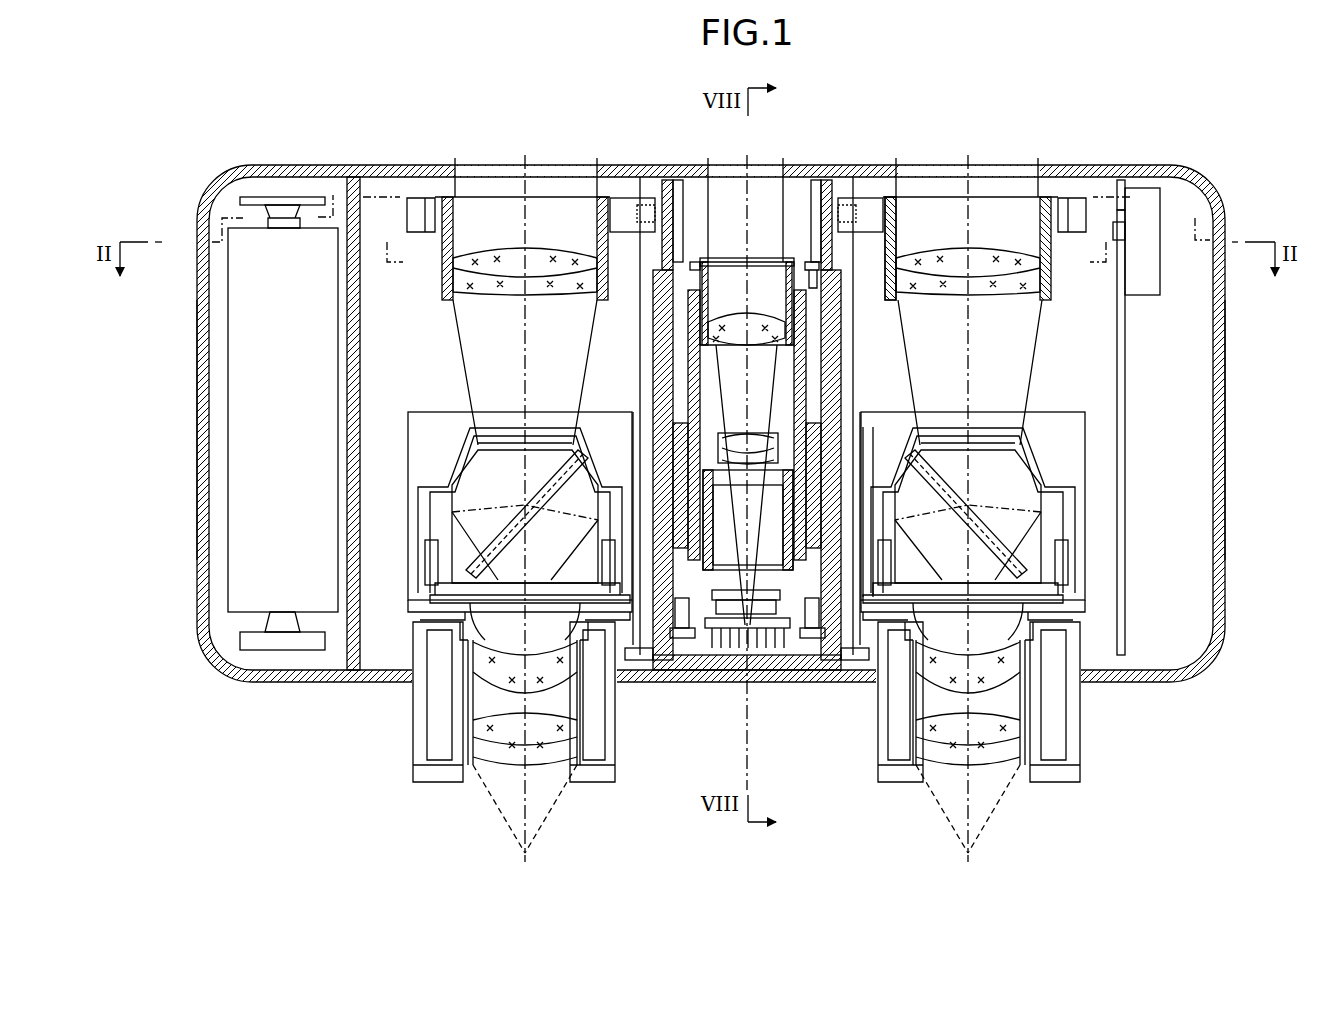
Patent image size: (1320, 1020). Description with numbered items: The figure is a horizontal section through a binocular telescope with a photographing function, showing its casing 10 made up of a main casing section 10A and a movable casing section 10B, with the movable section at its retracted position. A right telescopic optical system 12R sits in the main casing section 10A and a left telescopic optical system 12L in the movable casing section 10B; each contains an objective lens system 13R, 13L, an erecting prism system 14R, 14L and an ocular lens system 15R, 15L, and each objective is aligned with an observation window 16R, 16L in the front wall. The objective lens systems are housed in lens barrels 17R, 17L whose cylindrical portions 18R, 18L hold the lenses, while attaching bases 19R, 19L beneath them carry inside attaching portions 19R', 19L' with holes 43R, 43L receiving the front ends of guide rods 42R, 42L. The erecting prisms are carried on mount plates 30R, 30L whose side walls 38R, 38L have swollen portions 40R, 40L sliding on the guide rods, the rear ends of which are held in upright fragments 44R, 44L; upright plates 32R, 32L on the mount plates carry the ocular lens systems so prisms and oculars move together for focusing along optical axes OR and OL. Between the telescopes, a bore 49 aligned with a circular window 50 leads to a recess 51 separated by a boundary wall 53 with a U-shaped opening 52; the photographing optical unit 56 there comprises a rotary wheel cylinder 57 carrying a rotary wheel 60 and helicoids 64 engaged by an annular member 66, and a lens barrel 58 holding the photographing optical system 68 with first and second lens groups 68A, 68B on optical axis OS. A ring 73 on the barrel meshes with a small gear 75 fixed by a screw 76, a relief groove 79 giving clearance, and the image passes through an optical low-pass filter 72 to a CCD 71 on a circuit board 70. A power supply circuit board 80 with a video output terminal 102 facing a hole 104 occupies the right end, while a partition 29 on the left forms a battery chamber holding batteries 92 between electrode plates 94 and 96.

The casing 10 is at (818, 166).
The main casing section 10A is at (1228, 405).
The movable casing section 10B is at (195, 437).
The left telescopic optical system 12L is at (492, 221).
The right telescopic optical system 12R is at (972, 226).
The objective lens system 13L is at (495, 293).
The objective lens system 13R is at (1005, 293).
The erecting prism system 14L is at (450, 510).
The erecting prism system 14R is at (1045, 512).
The ocular lens system 15L is at (500, 772).
The ocular lens system 15R is at (995, 772).
The observation window 16L is at (597, 170).
The observation window 16R is at (900, 172).
The lens barrel 17L is at (440, 255).
The lens barrel 17R is at (1056, 250).
The cylindrical portion 18L is at (608, 292).
The cylindrical portion 18R is at (891, 270).
The attaching base 19L is at (401, 177).
The inside attaching portion 19L' is at (624, 175).
The attaching base 19R is at (1084, 177).
The inside attaching portion 19R' is at (876, 158).
The partition 29 is at (360, 318).
The left mount plate 30L is at (447, 412).
The right mount plate 30R is at (1080, 412).
The upright plate 32L is at (460, 620).
The upright plate 32R is at (1035, 620).
The side wall 38L is at (638, 460).
The side wall 38R is at (963, 447).
The swollen portion 40L is at (640, 403).
The swollen portion 40R is at (868, 432).
The guide rod 42L is at (653, 350).
The guide rod 42R is at (841, 380).
The hole 43L is at (645, 210).
The hole 43R is at (848, 204).
The upright fragment 44L is at (645, 660).
The upright fragment 44R is at (853, 660).
The bore 49 is at (683, 198).
The circular window 50 is at (720, 165).
The recess 51 is at (895, 352).
The U-shaped opening 52 is at (730, 339).
The boundary wall 53 is at (668, 262).
The photographing optical unit 56 is at (825, 376).
The rotary wheel cylinder 57 is at (690, 332).
The lens barrel 58 is at (735, 628).
The rotary wheel 60 is at (865, 482).
The helicoids 64 is at (680, 370).
The annular member 66 is at (815, 403).
The photographing optical system 68 is at (733, 306).
The first lens group 68A is at (763, 310).
The second lens group 68B is at (758, 430).
The circuit board 70 is at (687, 640).
The CCD 71 is at (780, 630).
The optical low-pass filter 72 is at (722, 537).
The ring 73 is at (695, 260).
The small gear 75 is at (898, 237).
The screw 76 is at (812, 260).
The semi-circle section groove 79 is at (816, 200).
The power supply circuit board 80 is at (1127, 420).
The batteries 92 is at (228, 550).
The electrode plate 94 is at (292, 196).
The electrode plate 96 is at (290, 650).
The video output terminal 102 is at (1142, 296).
The hole 104 is at (1125, 182).
The optical axis OL is at (528, 213).
The optical axis OR is at (971, 226).
The optical axis OS is at (750, 740).